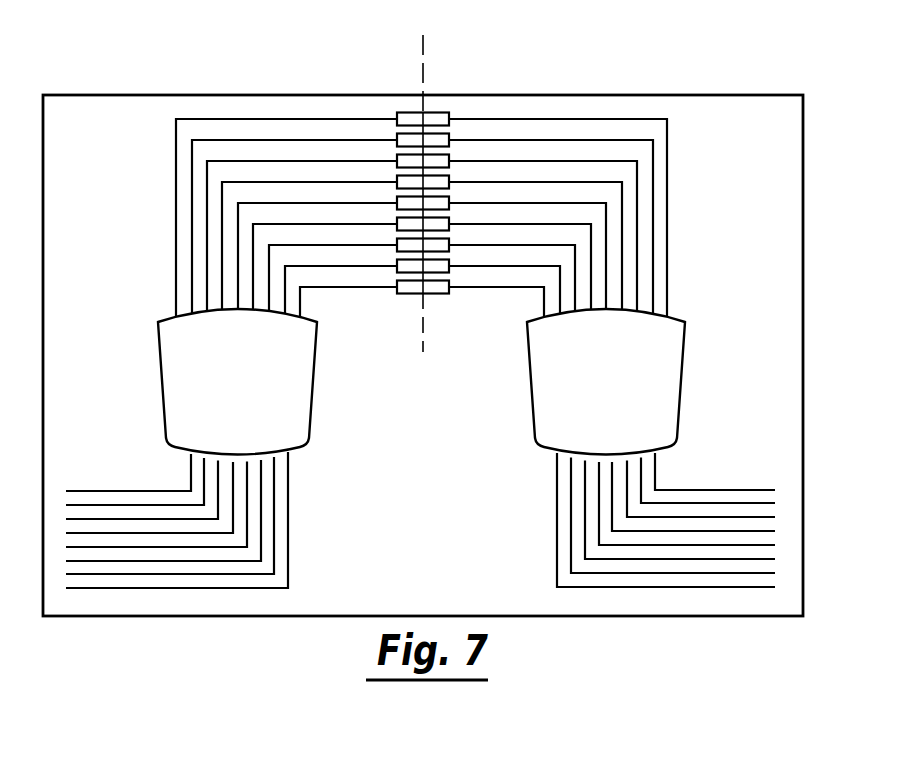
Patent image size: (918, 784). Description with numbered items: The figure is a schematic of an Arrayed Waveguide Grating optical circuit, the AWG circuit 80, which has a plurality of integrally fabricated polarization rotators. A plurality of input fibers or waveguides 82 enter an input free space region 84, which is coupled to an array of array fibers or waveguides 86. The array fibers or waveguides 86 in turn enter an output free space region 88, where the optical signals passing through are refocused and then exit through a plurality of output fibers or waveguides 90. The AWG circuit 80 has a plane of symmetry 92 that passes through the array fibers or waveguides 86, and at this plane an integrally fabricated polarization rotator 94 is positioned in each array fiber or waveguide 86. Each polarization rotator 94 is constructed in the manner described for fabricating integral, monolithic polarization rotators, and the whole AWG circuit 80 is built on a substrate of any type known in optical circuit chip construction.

The AWG circuit 80 is at (128, 197).
The input fibers or waveguides 82 is at (108, 487).
The input free space region 84 is at (168, 390).
The array fibers or waveguides 86 is at (259, 114).
The output free space region 88 is at (678, 380).
The output fibers or waveguides 90 is at (715, 483).
The plane of symmetry 92 is at (426, 73).
The polarization rotator 94 is at (397, 157).